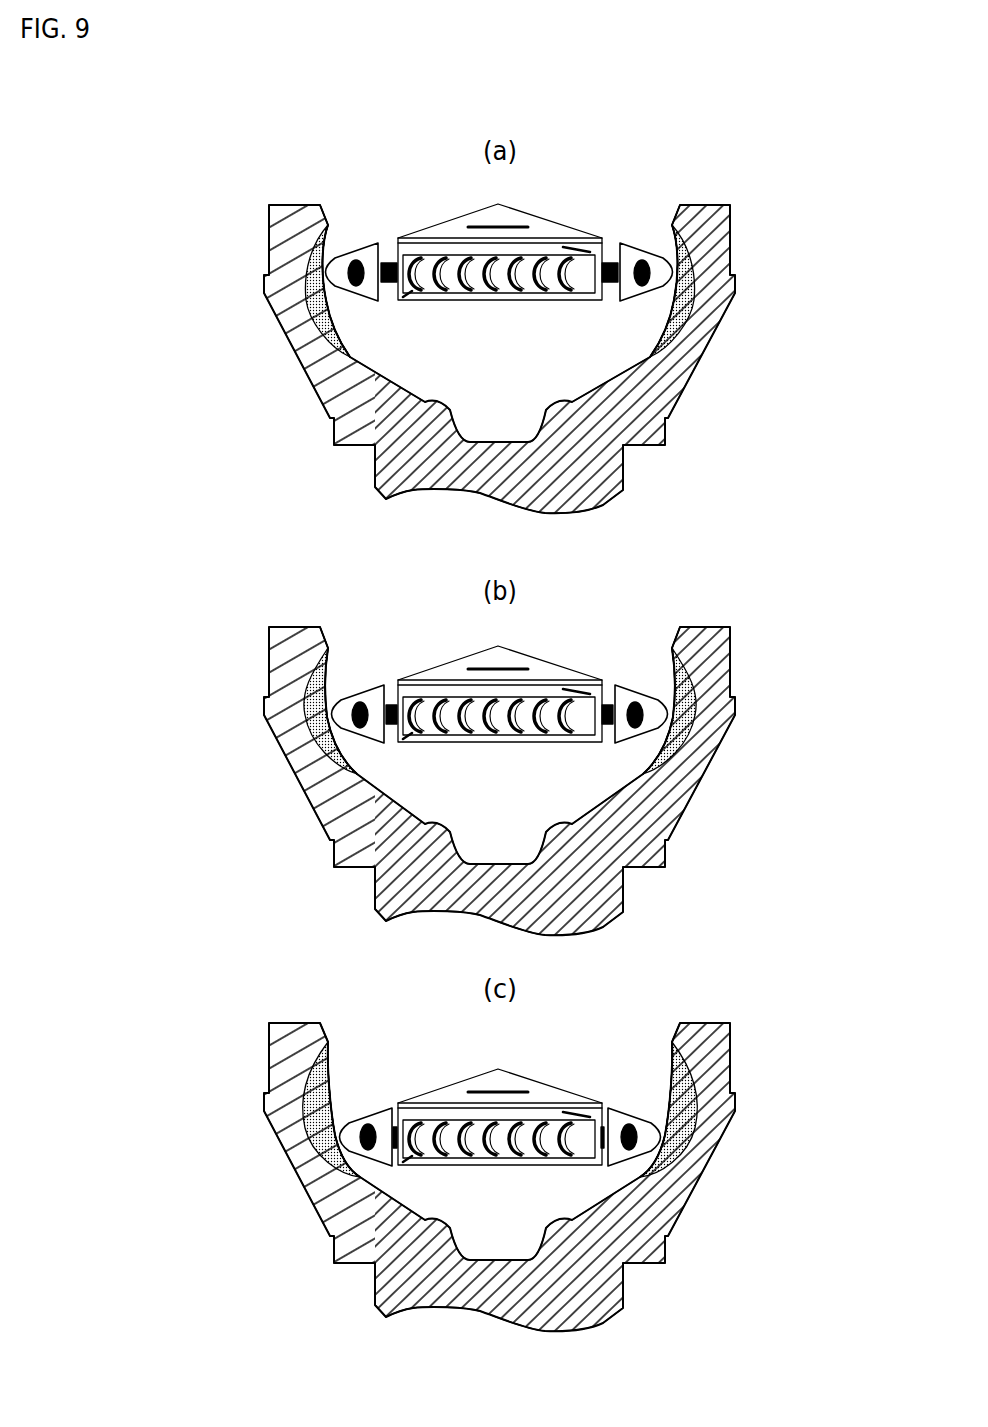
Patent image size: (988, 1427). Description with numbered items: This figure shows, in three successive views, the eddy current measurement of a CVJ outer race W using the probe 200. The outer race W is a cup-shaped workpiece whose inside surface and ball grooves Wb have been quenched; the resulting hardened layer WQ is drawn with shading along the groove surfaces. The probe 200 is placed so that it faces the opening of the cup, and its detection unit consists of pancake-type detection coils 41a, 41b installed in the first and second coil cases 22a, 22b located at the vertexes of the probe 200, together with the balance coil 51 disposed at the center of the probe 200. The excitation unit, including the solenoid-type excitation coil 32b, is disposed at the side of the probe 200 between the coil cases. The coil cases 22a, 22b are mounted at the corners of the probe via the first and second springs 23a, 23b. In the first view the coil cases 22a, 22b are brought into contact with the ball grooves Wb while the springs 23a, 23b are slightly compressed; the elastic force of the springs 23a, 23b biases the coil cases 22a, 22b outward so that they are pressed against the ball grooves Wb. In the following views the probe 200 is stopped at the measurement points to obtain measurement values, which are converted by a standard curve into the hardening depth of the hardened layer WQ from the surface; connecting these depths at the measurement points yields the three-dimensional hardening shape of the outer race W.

The CVJ outer race W is at (744, 363).
The hardened layer WQ is at (302, 268).
The ball grooves Wb is at (338, 322).
The probe 200 is at (542, 187).
The balance coil 51 is at (482, 228).
The excitation coil 32b is at (468, 290).
The second spring 23b is at (389, 285).
The first spring 23a is at (609, 285).
The second coil case 22b is at (378, 242).
The first coil case 22a is at (622, 243).
The detection coil 41b is at (356, 262).
The detection coil 41a is at (642, 262).